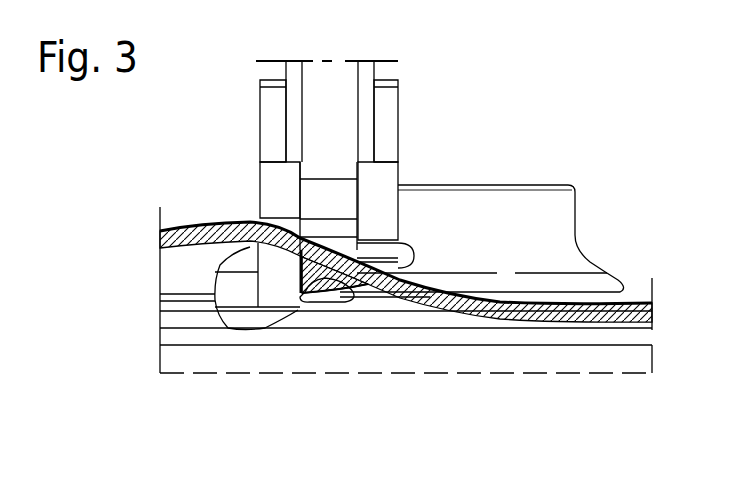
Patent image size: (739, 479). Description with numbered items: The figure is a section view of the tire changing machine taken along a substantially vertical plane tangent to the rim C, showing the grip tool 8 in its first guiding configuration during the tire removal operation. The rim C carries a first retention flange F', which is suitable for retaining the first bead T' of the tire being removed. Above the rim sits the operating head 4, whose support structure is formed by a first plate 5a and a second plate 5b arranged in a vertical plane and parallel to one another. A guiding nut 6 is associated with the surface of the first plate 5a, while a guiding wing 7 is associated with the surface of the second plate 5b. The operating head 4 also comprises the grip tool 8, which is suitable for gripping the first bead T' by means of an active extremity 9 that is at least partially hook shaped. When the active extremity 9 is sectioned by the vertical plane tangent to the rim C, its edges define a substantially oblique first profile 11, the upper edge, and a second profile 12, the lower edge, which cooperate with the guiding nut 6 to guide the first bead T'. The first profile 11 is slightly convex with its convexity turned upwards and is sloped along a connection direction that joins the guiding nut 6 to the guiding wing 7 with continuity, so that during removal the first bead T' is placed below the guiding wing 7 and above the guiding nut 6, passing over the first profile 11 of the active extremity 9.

The first plate 5a is at (297, 80).
The second plate 5b is at (365, 80).
The grip tool 8 is at (327, 117).
The operating head 4 is at (401, 162).
The guiding wing 7 is at (487, 233).
The first profile 11 is at (302, 248).
The first bead T' is at (411, 263).
The first retention flange F' is at (149, 275).
The guiding nut 6 is at (245, 317).
The second profile 12 is at (320, 297).
The active extremity 9 is at (338, 277).
The rim C is at (610, 355).